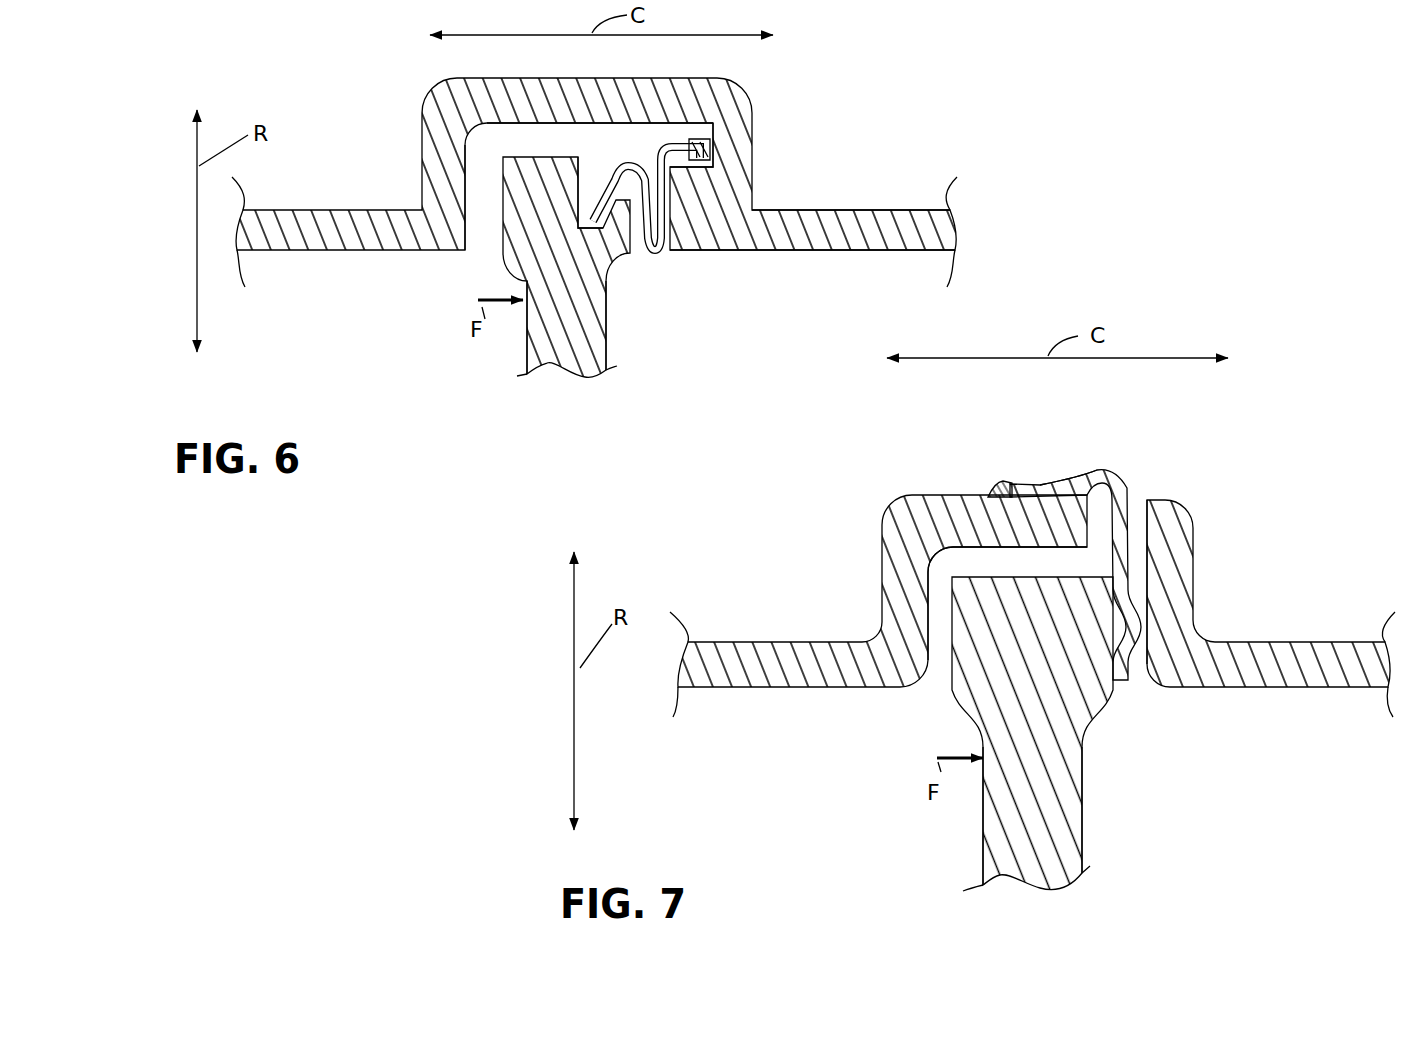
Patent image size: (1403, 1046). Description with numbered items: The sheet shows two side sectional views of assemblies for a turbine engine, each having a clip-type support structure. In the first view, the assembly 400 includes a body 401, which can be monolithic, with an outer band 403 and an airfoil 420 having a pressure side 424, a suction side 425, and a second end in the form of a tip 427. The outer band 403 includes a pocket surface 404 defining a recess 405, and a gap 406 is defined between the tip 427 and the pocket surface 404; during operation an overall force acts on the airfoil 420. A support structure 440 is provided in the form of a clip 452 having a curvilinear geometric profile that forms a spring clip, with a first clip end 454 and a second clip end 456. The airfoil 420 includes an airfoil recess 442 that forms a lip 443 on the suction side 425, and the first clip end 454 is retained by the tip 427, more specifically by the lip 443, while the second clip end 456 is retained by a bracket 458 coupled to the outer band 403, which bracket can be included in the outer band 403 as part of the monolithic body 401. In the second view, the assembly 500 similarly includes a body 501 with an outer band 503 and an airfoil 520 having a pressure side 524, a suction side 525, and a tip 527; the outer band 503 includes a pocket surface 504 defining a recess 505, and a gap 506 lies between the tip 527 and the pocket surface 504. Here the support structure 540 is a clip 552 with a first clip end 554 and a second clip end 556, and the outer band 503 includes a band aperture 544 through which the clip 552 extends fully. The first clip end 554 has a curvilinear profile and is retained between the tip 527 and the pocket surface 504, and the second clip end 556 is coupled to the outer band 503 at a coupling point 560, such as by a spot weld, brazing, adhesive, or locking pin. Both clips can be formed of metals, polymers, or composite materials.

In FIG. 6, the assembly 400 is at (887, 76).
In FIG. 6, the body 401 is at (420, 118).
In FIG. 6, the outer band 403 is at (866, 213).
In FIG. 6, the pocket surface 404 is at (528, 130).
In FIG. 6, the recess 405 is at (484, 240).
In FIG. 6, the gap 406 is at (573, 138).
In FIG. 6, the airfoil 420 is at (570, 340).
In FIG. 6, the pressure side 424 is at (527, 345).
In FIG. 6, the suction side 425 is at (607, 348).
In FIG. 6, the tip 427 is at (587, 290).
In FIG. 6, the support structure 440 is at (728, 161).
In FIG. 6, the airfoil recess 442 is at (592, 220).
In FIG. 6, the lip 443 is at (614, 222).
In FIG. 6, the clip 452 is at (661, 262).
In FIG. 6, the first clip end 454 is at (600, 200).
In FIG. 6, the second clip end 456 is at (665, 165).
In FIG. 6, the bracket 458 is at (712, 137).
In FIG. 7, the assembly 500 is at (1276, 477).
In FIG. 7, the body 501 is at (878, 545).
In FIG. 7, the outer band 503 is at (1306, 650).
In FIG. 7, the pocket surface 504 is at (978, 560).
In FIG. 7, the recess 505 is at (940, 652).
In FIG. 7, the gap 506 is at (968, 566).
In FIG. 7, the airfoil 520 is at (1030, 860).
In FIG. 7, the pressure side 524 is at (983, 852).
In FIG. 7, the suction side 525 is at (1082, 807).
In FIG. 7, the tip 527 is at (1052, 715).
In FIG. 7, the support structure 540 is at (1150, 490).
In FIG. 7, the band aperture 544 is at (1149, 531).
In FIG. 7, the clip 552 is at (1119, 478).
In FIG. 7, the first clip end 554 is at (1131, 682).
In FIG. 7, the second clip end 556 is at (1047, 488).
In FIG. 7, the coupling point 560 is at (1003, 480).